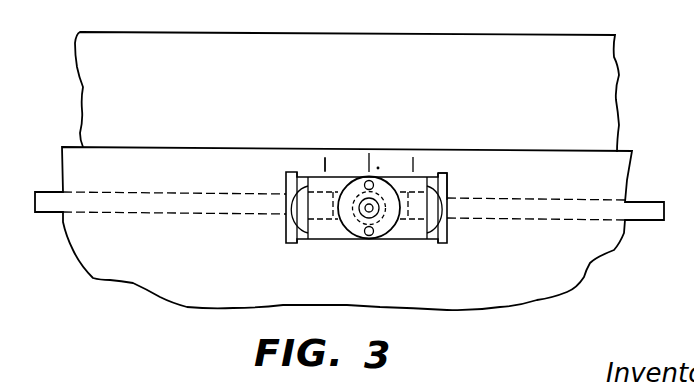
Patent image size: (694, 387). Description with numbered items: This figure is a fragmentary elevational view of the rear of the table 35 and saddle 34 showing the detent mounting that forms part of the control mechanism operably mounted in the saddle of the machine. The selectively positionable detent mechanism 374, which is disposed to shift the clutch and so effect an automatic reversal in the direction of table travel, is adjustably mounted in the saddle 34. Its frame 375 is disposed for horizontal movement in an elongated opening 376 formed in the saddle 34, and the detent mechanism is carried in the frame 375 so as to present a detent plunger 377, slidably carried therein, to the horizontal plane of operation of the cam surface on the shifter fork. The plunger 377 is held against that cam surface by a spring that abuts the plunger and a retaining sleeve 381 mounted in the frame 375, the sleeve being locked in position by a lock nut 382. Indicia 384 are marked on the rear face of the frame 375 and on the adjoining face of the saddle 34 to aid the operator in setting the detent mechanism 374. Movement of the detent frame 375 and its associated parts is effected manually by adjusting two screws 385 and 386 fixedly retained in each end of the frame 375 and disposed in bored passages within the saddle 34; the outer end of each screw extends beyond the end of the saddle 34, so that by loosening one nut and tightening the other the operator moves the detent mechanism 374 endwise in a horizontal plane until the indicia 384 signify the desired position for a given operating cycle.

The upper housing member 35 is at (556, 44).
The saddle 34 is at (614, 187).
The detent mechanism 374 is at (391, 165).
The frame 375 is at (448, 182).
The elongated opening 376 is at (448, 232).
The detent plunger 377 is at (371, 208).
The retaining sleeve 381 is at (380, 219).
The lock nut 382 is at (373, 241).
The indicia 384 is at (327, 169).
The screw 385 is at (188, 203).
The screw 386 is at (552, 208).